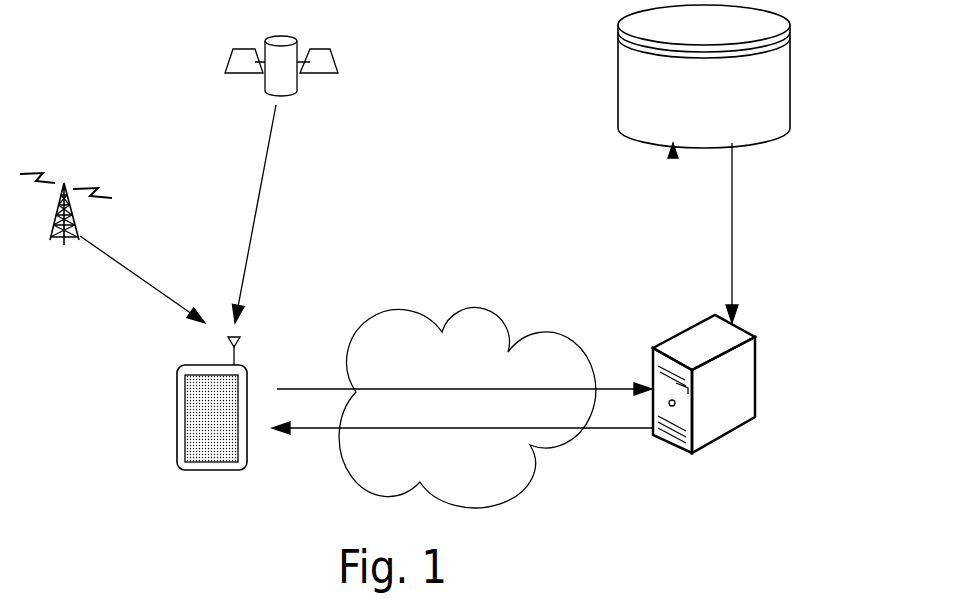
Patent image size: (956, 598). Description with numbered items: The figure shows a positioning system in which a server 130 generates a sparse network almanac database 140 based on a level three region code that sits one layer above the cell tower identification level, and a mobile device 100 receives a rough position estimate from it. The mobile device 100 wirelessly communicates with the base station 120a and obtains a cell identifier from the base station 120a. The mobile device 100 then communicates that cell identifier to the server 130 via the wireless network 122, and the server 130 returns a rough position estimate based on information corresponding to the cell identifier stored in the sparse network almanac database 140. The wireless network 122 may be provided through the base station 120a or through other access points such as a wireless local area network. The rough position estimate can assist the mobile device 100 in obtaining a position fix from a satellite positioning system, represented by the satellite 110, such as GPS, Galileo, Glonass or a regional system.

The mobile device 100 is at (177, 408).
The satellite 110 is at (333, 55).
The base station 120a is at (64, 183).
The wireless network 122 is at (502, 327).
The server 130 is at (755, 377).
The sparse network almanac database 140 is at (618, 70).